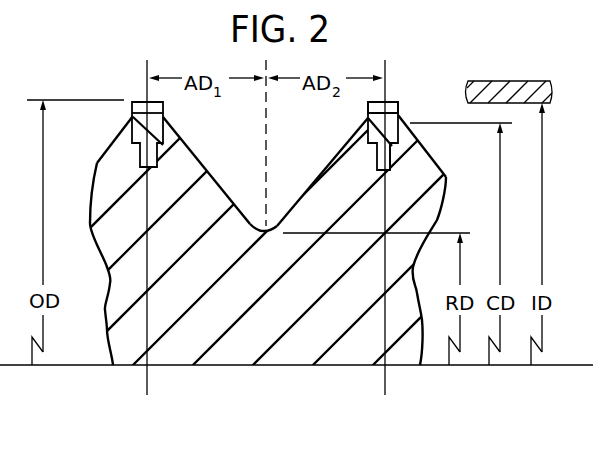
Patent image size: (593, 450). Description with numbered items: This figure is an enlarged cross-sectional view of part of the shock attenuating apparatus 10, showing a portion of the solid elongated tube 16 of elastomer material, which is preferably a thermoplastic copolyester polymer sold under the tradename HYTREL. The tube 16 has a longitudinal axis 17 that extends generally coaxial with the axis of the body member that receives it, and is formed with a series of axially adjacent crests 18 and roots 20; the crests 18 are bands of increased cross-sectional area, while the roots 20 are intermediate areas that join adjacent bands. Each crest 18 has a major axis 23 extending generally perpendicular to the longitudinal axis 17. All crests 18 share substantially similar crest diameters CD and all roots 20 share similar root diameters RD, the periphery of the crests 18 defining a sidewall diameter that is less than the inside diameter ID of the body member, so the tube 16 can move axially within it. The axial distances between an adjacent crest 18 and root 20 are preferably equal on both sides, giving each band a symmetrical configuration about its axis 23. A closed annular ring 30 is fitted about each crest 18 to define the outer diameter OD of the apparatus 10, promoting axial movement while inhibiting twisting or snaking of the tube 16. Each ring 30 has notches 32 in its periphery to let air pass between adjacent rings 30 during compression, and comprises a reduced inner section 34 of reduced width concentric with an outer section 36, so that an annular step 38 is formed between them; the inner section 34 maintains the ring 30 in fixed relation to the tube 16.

The shock attenuating apparatus 10 is at (97, 93).
The elongated tube 16 is at (436, 148).
The longitudinal axis 17 is at (217, 366).
The crest 18 is at (172, 152).
The root 20 is at (258, 224).
The major axis of crest 23 is at (148, 377).
The closed annular ring 30 is at (418, 113).
The notch 32 is at (143, 102).
The inner section 34 is at (140, 158).
The outer section 36 is at (158, 117).
The annular step 38 is at (160, 143).